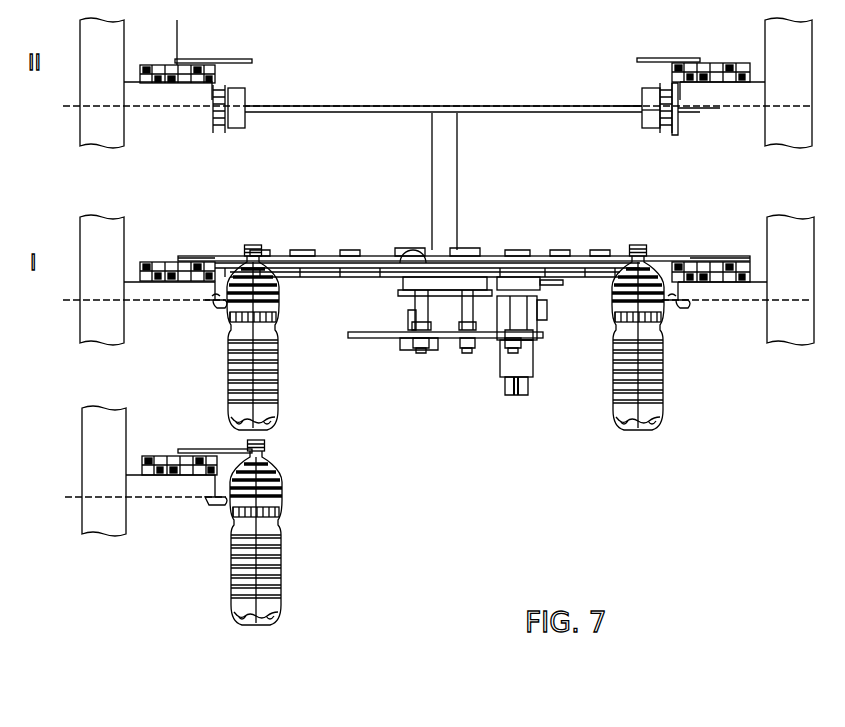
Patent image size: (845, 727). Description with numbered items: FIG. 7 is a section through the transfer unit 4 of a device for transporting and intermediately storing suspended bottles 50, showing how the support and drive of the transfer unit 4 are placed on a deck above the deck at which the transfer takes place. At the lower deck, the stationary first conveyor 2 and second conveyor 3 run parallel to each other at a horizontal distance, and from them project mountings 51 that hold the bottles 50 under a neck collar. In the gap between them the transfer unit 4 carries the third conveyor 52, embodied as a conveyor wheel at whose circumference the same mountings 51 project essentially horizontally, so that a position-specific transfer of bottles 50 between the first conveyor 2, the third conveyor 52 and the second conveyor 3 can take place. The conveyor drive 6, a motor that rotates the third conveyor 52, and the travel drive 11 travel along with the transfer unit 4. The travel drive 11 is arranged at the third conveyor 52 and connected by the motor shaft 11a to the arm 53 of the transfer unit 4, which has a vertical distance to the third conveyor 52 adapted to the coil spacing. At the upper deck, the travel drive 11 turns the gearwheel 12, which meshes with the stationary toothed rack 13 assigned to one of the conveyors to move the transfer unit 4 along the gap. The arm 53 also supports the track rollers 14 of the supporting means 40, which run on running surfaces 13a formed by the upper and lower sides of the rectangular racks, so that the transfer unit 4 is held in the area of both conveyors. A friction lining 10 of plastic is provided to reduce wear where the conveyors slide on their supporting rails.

The first conveyor 2 is at (740, 63).
The second conveyor 3 is at (152, 64).
The transfer unit 4 is at (470, 386).
The conveyor drive 6 is at (542, 384).
The friction lining 10 is at (226, 133).
The travel drive 11 is at (440, 344).
The motor shaft 11a is at (437, 165).
The gearwheel 12 is at (646, 117).
The toothed rack 13 is at (685, 118).
The running surface 13a is at (225, 310).
The track roller 14 is at (216, 132).
The supporting means 40 is at (645, 142).
The bottle 50 is at (278, 393).
The mounting 51 is at (226, 59).
The third conveyor 52 is at (527, 258).
The arm 53 is at (523, 98).